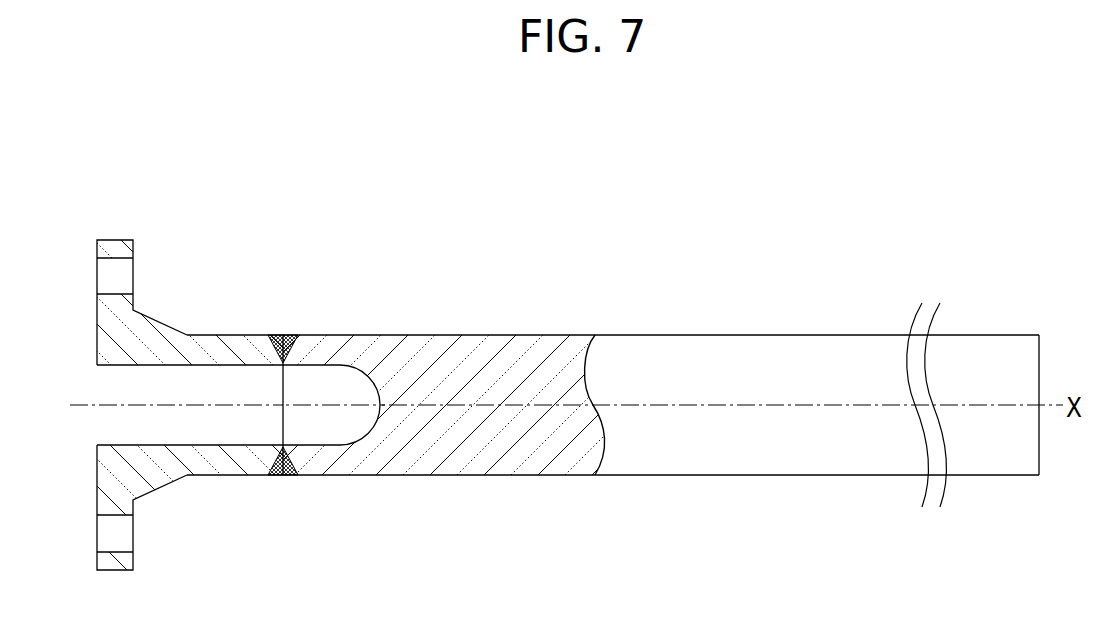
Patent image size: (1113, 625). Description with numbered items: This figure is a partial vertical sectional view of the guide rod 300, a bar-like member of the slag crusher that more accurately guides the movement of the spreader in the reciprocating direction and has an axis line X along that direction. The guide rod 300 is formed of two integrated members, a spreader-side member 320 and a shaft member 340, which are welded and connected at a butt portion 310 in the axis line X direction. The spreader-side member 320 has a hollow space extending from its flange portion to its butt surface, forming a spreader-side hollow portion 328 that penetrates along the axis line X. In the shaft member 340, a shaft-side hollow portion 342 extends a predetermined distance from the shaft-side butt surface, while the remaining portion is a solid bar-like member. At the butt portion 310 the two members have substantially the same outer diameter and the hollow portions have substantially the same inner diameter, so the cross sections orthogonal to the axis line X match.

The guide rod 300 is at (730, 240).
The butt portion 310 is at (283, 317).
The spreader-side member 320 is at (233, 477).
The spreader-side hollow portion 328 is at (217, 440).
The shaft member 340 is at (534, 477).
The shaft-side hollow portion 342 is at (342, 439).